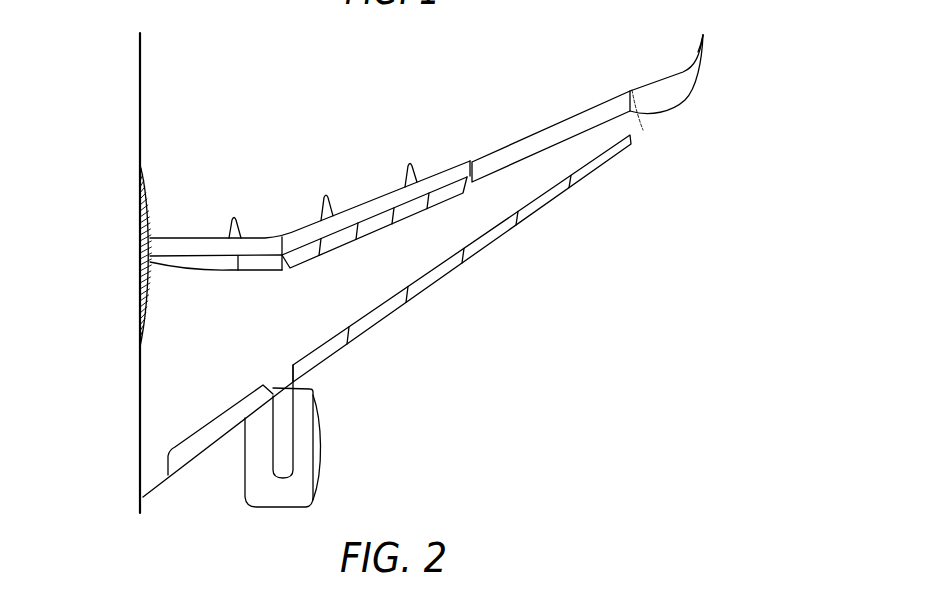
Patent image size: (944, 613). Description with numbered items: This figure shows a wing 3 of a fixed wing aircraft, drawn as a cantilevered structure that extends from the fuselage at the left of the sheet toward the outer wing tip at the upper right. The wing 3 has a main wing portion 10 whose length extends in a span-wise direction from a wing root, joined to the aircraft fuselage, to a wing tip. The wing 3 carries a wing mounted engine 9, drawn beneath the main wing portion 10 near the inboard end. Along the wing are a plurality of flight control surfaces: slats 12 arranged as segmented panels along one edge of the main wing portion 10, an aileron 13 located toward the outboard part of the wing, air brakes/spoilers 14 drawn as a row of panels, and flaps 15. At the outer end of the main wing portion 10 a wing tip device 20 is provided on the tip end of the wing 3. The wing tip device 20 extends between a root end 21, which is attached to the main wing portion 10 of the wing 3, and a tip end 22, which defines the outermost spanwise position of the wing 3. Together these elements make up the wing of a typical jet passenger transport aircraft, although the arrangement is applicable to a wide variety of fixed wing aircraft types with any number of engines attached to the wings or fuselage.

The starboard wing 3 is at (563, 362).
The wing mounted engine 9 is at (267, 490).
The main wing portion 10 is at (467, 213).
The slat 12 is at (547, 198).
The aileron 13 is at (565, 124).
The air brake/spoiler 14 is at (303, 250).
The flap 15 is at (205, 245).
The wing tip device 20 is at (680, 80).
The root end 21 is at (647, 127).
The tip end 22 is at (703, 35).